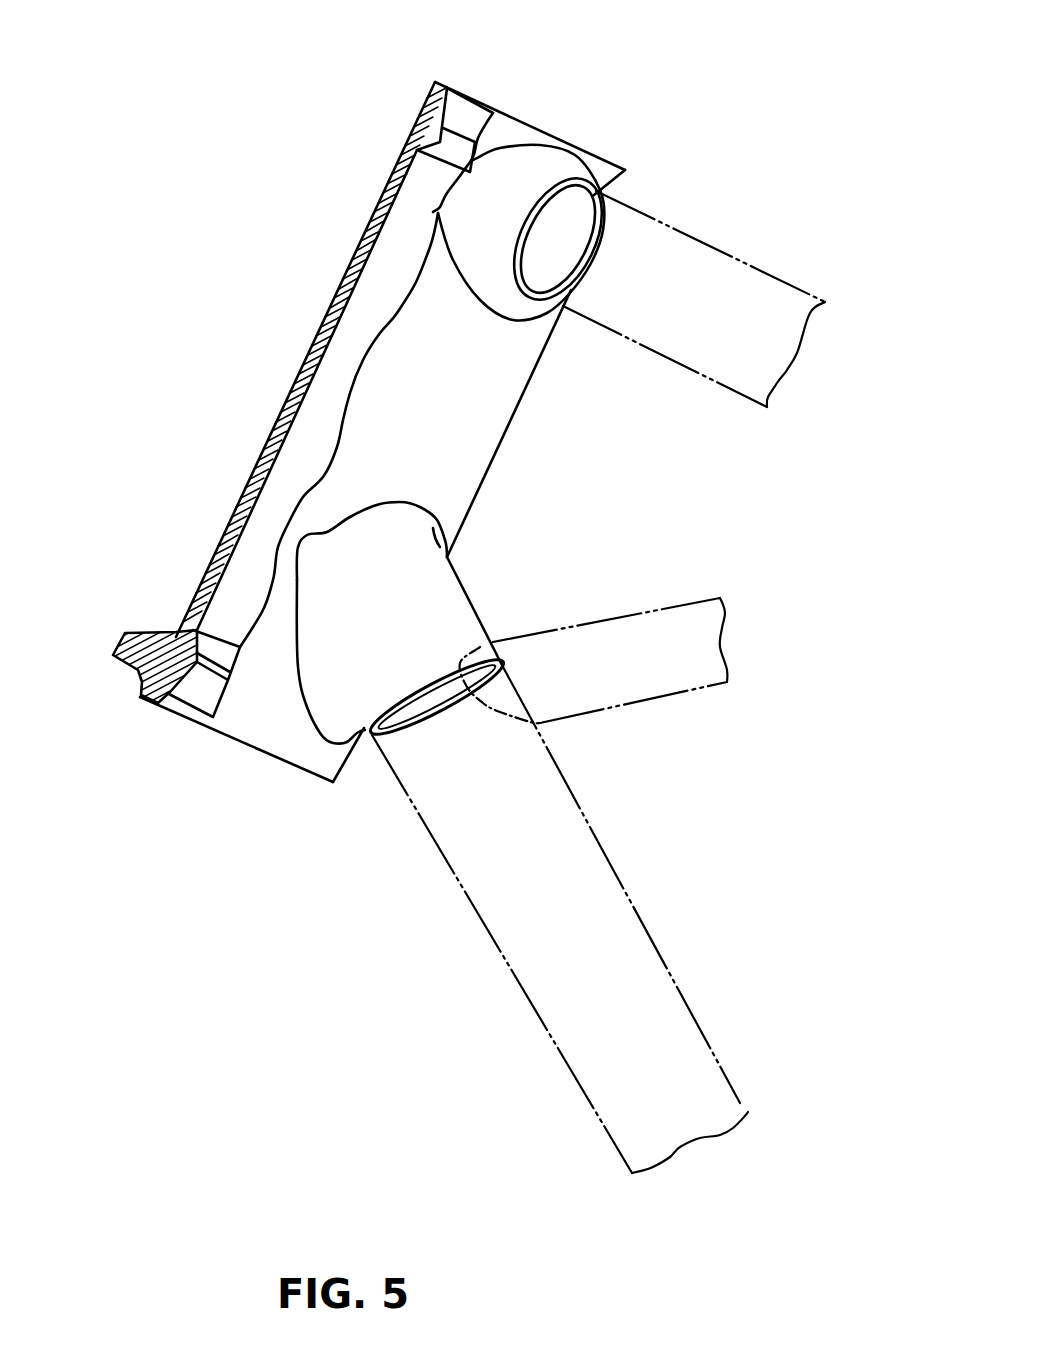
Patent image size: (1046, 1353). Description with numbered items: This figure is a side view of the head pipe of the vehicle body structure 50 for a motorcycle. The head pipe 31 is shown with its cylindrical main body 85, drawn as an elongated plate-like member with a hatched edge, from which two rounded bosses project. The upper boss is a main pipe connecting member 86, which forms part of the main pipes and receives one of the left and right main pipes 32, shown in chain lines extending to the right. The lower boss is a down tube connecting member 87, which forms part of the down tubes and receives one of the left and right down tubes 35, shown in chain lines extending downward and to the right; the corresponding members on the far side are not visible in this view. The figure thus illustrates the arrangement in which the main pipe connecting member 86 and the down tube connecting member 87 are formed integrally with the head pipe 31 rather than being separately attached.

The vehicle body structure 50 is at (193, 83).
The head pipe 31 is at (305, 287).
The cylindrical main body 85 is at (353, 247).
The main pipe connecting member 86 is at (562, 160).
The down tube connecting member 87 is at (452, 625).
The main pipe 32 is at (713, 240).
The down tube 35 is at (603, 845).